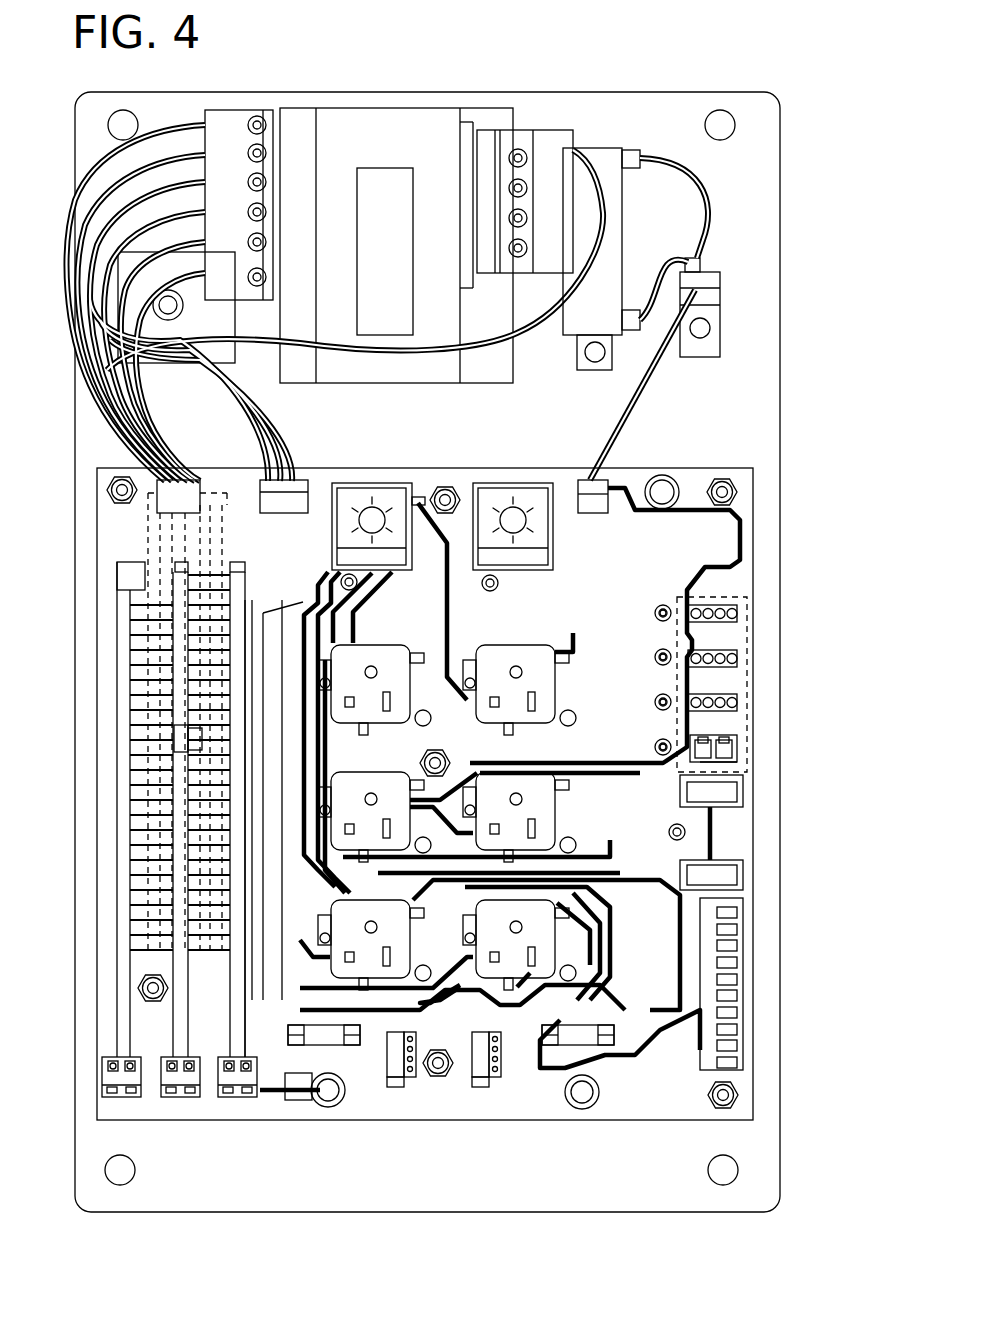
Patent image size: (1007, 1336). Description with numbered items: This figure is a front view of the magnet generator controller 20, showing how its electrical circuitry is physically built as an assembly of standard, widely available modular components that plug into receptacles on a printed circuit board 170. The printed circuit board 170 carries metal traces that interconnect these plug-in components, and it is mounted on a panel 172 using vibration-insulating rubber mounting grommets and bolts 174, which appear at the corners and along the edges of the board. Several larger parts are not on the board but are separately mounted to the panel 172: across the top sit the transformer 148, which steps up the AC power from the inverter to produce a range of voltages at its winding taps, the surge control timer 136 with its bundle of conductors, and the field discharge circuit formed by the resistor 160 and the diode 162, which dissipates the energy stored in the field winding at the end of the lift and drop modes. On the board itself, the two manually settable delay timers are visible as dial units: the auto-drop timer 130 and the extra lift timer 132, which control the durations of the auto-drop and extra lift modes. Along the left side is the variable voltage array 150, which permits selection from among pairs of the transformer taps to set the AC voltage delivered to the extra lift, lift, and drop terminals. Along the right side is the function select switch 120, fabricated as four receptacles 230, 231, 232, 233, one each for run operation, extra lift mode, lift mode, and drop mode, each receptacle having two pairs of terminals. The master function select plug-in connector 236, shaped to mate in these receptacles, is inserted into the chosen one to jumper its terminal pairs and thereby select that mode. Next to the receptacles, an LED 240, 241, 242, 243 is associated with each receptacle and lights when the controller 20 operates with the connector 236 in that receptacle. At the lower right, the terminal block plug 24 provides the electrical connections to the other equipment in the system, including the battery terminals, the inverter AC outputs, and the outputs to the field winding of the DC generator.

The magnet generator controller 20 is at (316, 66).
The transformer 148 is at (413, 130).
The surge control timer 136 is at (167, 262).
The resistor 160 is at (728, 330).
The diode 162 is at (713, 280).
The panel 172 is at (767, 400).
The vibration-insulating rubber mounting grommets and bolts 174 is at (108, 503).
The extra lift timer 132 is at (372, 508).
The auto-drop timer 130 is at (513, 508).
The printed circuit board 170 is at (755, 582).
The LED 243 is at (655, 614).
The LED 242 is at (655, 658).
The LED 241 is at (655, 703).
The LED 240 is at (655, 748).
The receptacle 233 is at (737, 612).
The receptacle 232 is at (737, 660).
The receptacle 231 is at (737, 705).
The receptacle 230 is at (737, 745).
The master function select plug-in connector 236 is at (725, 762).
The function select switch 120 is at (713, 684).
The terminal block plug 24 is at (740, 982).
The variable voltage array 150 is at (140, 776).